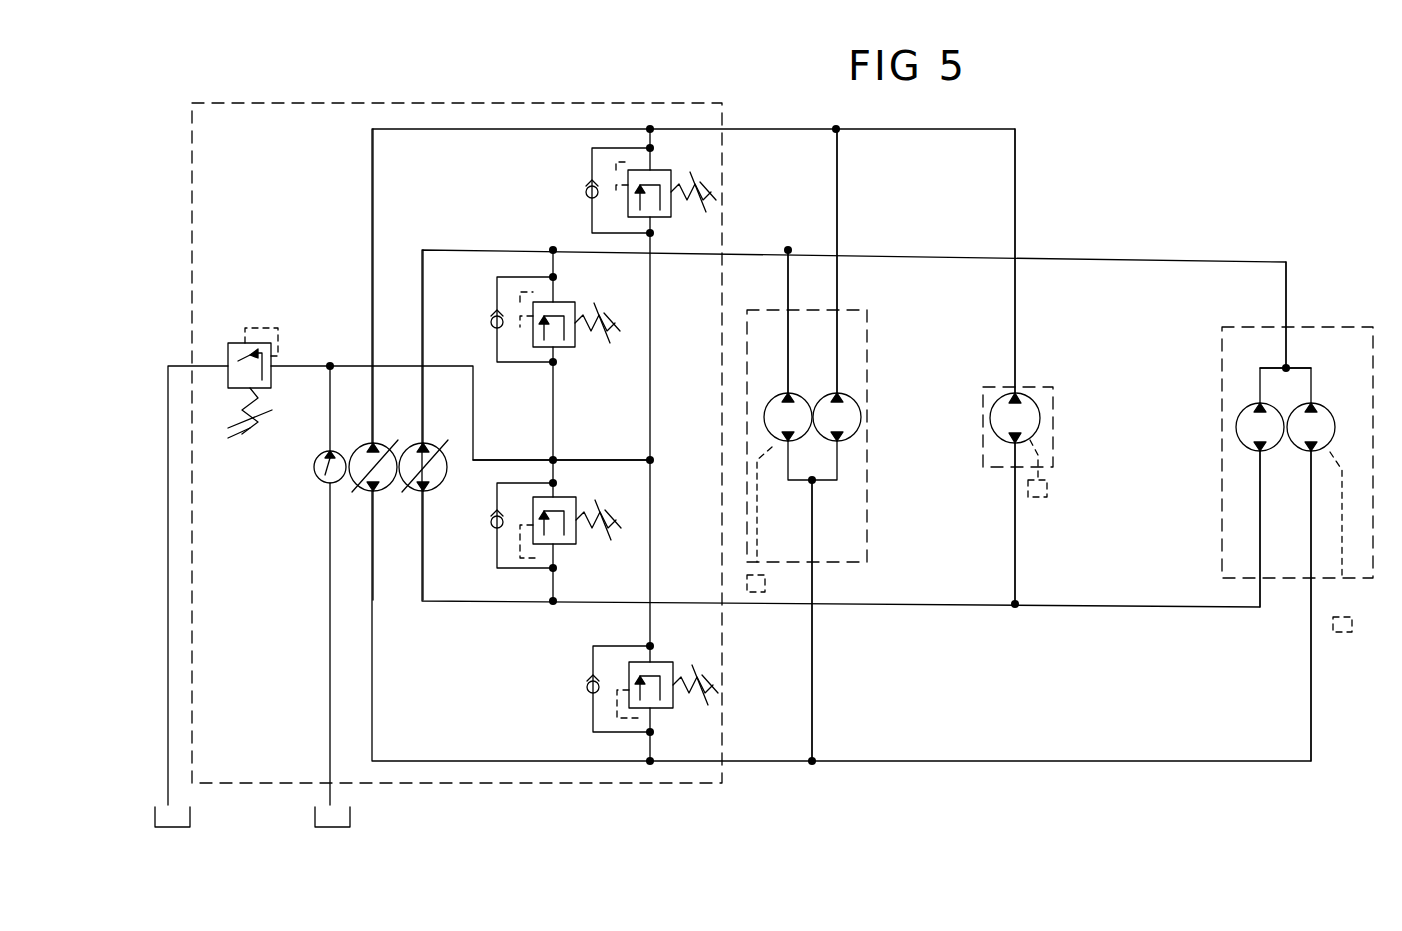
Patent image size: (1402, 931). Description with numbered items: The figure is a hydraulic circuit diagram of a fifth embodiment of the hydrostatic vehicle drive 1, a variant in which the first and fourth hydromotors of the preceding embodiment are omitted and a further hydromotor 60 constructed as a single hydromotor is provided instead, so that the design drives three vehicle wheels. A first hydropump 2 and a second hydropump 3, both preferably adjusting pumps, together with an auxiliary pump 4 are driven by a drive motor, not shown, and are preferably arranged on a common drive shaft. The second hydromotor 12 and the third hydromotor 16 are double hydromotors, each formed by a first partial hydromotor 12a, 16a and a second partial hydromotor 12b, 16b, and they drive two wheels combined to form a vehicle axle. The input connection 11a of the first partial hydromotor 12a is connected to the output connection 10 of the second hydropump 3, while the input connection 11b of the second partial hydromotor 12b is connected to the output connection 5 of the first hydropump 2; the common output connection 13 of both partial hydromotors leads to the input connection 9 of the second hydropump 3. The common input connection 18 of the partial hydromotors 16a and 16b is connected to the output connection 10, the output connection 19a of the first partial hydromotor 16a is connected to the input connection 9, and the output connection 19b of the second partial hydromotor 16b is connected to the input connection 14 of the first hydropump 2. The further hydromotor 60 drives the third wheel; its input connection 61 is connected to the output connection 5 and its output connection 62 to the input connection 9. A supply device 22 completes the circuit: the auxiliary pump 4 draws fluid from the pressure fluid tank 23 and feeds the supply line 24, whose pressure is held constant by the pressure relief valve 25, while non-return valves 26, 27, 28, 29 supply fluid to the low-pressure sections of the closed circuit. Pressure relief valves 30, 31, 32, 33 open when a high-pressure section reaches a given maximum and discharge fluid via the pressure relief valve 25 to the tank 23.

The hydrostatic vehicle drive 1 is at (1136, 168).
The first hydropump 2 is at (383, 492).
The second hydropump 3 is at (446, 478).
The auxiliary pump 4 is at (322, 483).
The output connection of the first hydropump 5 is at (373, 443).
The input connection of the second hydropump 9 is at (426, 495).
The output connection of the second hydropump 10 is at (423, 443).
The input connection of the first partial hydromotor 11a is at (788, 312).
The input connection of the second partial hydromotor 11b is at (837, 312).
The second hydromotor 12 is at (845, 521).
The first partial hydromotor 12a is at (775, 415).
The second partial hydromotor 12b is at (850, 415).
The common output connection 13 is at (812, 565).
The input connection of the first hydropump 14 is at (372, 500).
The third hydromotor 16 is at (1282, 523).
The first partial hydromotor 16a is at (1248, 425).
The second partial hydromotor 16b is at (1322, 420).
The common input connection 18 is at (1290, 368).
The output connection of the first partial hydromotor 19a is at (1252, 578).
The output connection of the second partial hydromotor 19b is at (1305, 580).
The supply device 22 is at (278, 460).
The pressure fluid tank 23 is at (172, 830).
The supply line 24 is at (583, 459).
The pressure relief valve 25 is at (236, 343).
The non-return valve 26 is at (491, 318).
The non-return valve 27 is at (500, 530).
The non-return valve 28 is at (586, 192).
The non-return valve 29 is at (587, 688).
The pressure relief valve 30 is at (566, 340).
The pressure relief valve 31 is at (566, 542).
The pressure relief valve 32 is at (660, 170).
The pressure relief valve 33 is at (660, 708).
The further hydromotor 60 is at (1025, 410).
The input connection of the further hydromotor 61 is at (1016, 390).
The output connection of the further hydromotor 62 is at (1015, 455).